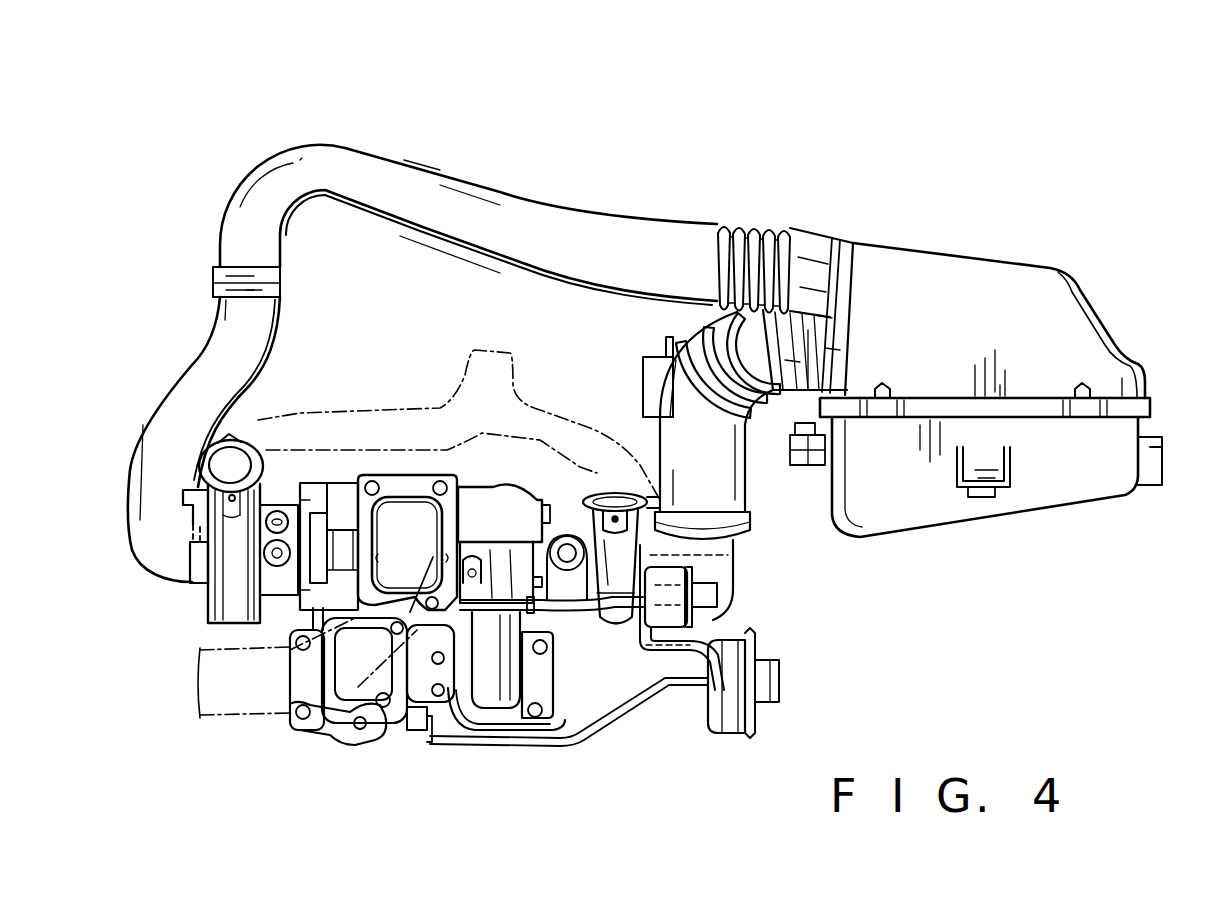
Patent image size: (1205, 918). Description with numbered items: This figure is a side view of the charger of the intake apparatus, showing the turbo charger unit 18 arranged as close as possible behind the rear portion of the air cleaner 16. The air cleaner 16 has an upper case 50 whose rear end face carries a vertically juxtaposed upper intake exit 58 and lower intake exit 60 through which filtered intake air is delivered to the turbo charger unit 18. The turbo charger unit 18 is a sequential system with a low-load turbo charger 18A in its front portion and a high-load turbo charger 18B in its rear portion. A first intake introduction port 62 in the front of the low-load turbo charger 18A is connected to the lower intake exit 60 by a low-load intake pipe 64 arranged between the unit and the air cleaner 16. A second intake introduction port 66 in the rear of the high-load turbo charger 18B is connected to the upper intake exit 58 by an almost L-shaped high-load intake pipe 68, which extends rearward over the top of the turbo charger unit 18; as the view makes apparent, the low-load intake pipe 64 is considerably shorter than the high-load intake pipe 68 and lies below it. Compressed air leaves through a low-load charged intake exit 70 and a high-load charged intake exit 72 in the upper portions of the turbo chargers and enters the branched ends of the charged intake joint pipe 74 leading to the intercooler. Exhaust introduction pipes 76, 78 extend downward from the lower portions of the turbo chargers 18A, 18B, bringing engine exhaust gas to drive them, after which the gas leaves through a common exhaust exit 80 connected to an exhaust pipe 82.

The air cleaner 16 is at (1010, 266).
The turbo charger unit 18 is at (485, 448).
The low-load turbo charger 18A is at (477, 478).
The high-load turbo charger 18B is at (342, 478).
The upper case 50 is at (1048, 328).
The upper intake exit 58 is at (840, 274).
The lower intake exit 60 is at (828, 351).
The first intake introduction port 62 is at (735, 590).
The low-load intake pipe 64 is at (750, 490).
The second intake introduction port 66 is at (190, 545).
The high-load intake pipe 68 is at (568, 207).
The low-load charged intake exit 70 is at (613, 490).
The high-load charged intake exit 72 is at (230, 462).
The charged intake joint pipe 74 is at (547, 393).
The exhaust introduction pipe 76 is at (300, 695).
The exhaust introduction pipe 78 is at (497, 702).
The common exhaust exit 80 is at (392, 710).
The exhaust pipe 82 is at (200, 722).